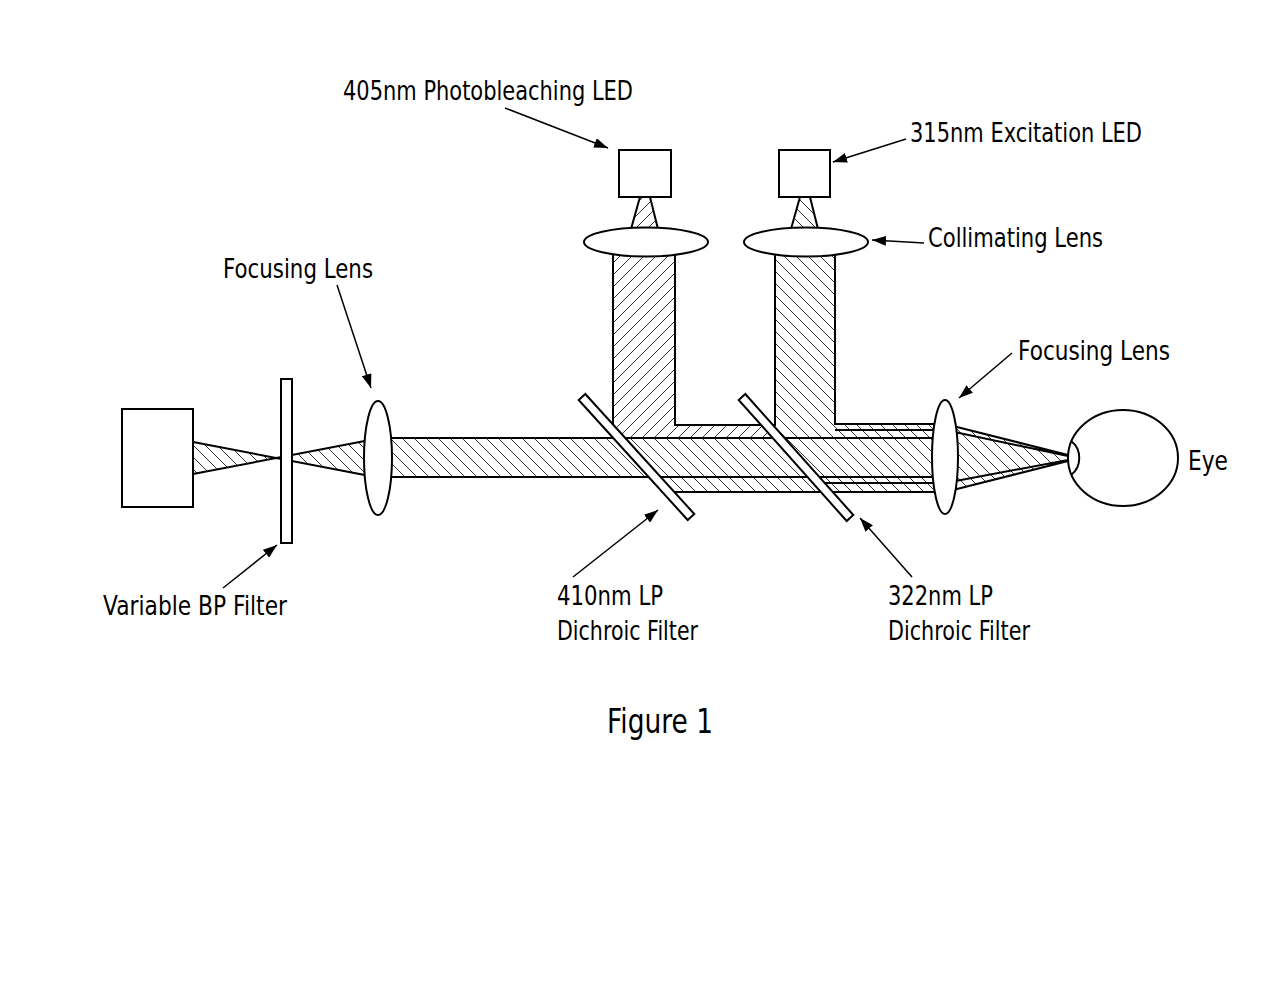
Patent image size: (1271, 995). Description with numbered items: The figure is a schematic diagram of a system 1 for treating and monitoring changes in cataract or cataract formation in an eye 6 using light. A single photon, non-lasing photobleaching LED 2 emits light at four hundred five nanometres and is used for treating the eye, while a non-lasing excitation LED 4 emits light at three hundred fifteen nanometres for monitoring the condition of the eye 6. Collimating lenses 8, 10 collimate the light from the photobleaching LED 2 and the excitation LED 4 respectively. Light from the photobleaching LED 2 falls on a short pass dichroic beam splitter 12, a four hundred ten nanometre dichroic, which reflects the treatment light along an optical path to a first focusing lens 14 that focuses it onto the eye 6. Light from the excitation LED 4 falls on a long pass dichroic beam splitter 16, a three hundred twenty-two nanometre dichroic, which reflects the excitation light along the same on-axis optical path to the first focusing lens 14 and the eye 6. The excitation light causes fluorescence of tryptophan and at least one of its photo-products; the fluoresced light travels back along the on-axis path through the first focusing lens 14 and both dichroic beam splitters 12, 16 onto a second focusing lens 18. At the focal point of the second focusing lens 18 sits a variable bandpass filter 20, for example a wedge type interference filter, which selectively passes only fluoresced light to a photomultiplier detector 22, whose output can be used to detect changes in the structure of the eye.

The system 1 is at (1188, 184).
The photobleaching LED 2 is at (653, 150).
The excitation LED 4 is at (808, 150).
The eye 6 is at (1163, 420).
The collimating lens 8 is at (587, 237).
The collimating lens 10 is at (843, 230).
The short pass dichroic beam splitter 12 is at (588, 397).
The first focusing lens 14 is at (947, 514).
The long pass dichroic beam splitter 16 is at (832, 510).
The second focusing lens 18 is at (378, 515).
The variable bandpass filter 20 is at (280, 397).
The photomultiplier detector 22 is at (122, 462).